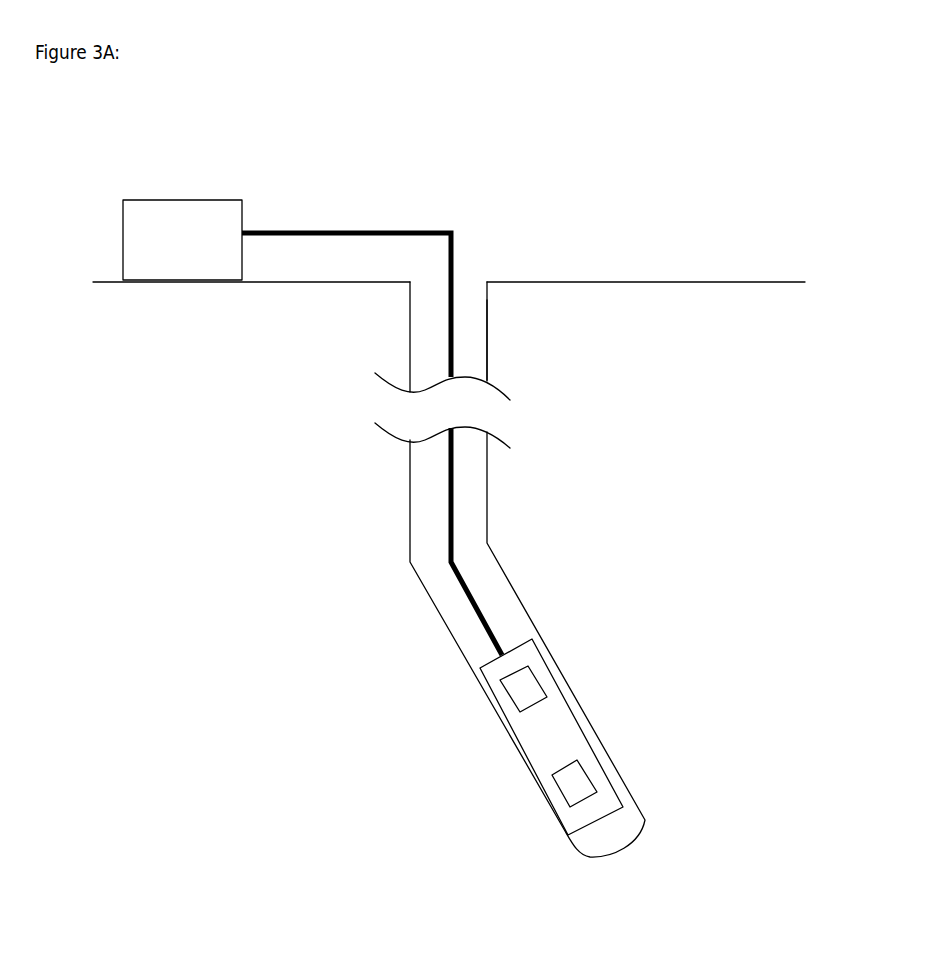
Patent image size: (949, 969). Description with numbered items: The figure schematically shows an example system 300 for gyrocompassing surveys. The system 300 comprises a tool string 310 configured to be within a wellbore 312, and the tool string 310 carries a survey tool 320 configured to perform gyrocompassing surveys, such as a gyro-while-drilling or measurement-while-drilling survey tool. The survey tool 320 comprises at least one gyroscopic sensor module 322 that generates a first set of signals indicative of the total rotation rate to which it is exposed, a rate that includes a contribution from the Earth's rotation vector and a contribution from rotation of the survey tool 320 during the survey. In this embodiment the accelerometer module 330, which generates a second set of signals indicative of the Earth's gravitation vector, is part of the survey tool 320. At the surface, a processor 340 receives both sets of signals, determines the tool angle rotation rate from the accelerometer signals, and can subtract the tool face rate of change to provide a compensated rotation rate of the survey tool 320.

The system 300 is at (515, 469).
The tool string 310 is at (597, 569).
The wellbore 312 is at (487, 339).
The survey tool 320 is at (638, 730).
The gyroscopic sensor module 322 is at (588, 773).
The accelerometer module 330 is at (535, 678).
The processor 340 is at (202, 200).